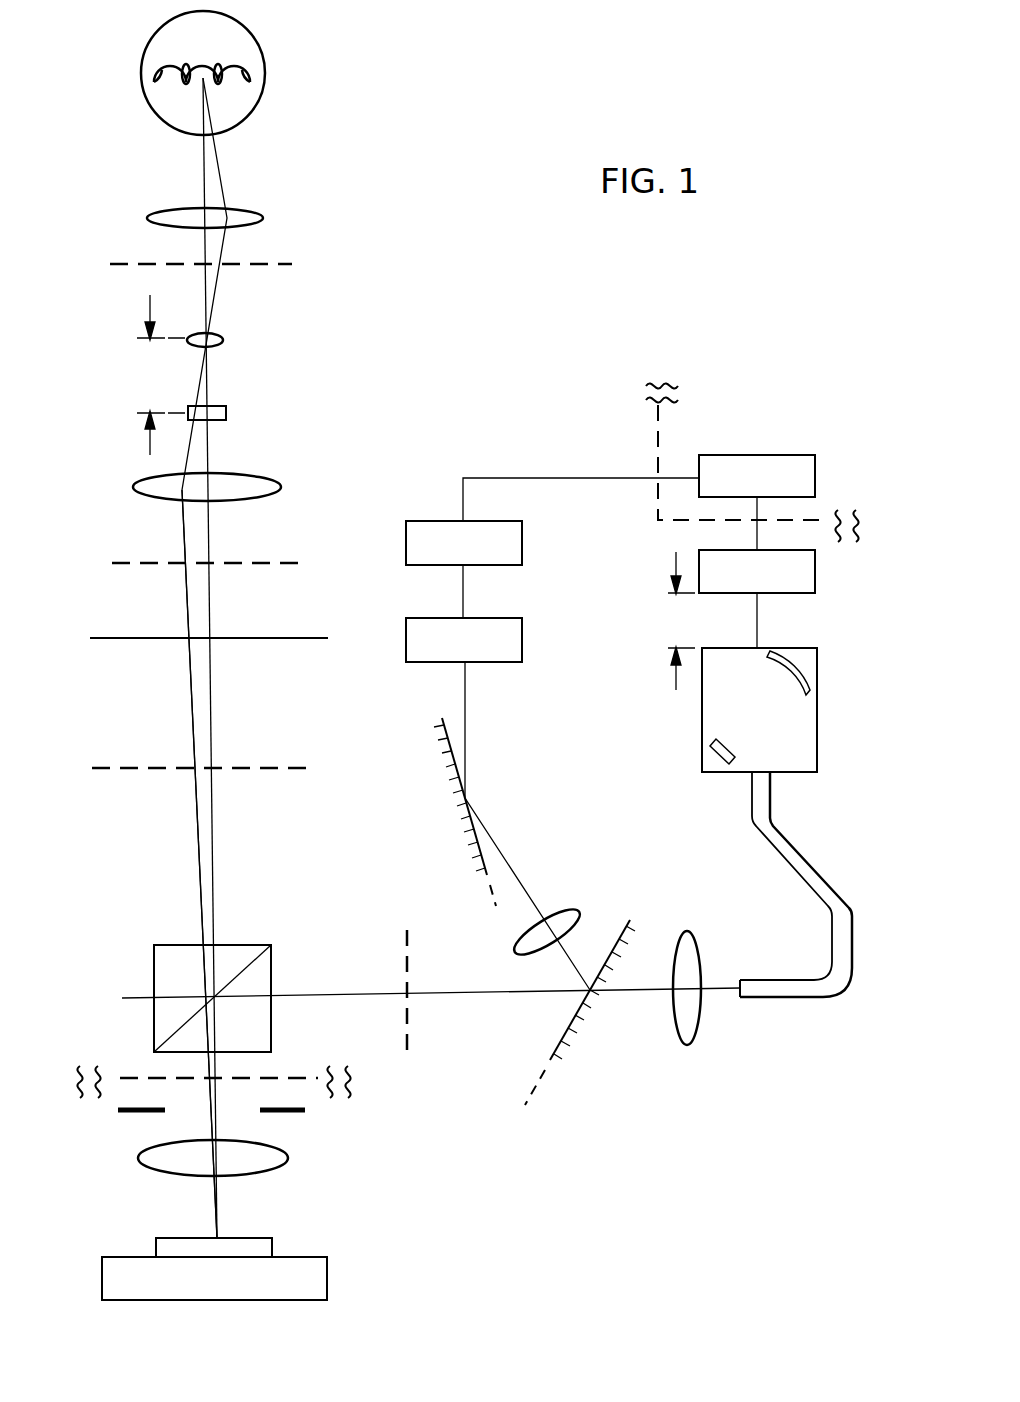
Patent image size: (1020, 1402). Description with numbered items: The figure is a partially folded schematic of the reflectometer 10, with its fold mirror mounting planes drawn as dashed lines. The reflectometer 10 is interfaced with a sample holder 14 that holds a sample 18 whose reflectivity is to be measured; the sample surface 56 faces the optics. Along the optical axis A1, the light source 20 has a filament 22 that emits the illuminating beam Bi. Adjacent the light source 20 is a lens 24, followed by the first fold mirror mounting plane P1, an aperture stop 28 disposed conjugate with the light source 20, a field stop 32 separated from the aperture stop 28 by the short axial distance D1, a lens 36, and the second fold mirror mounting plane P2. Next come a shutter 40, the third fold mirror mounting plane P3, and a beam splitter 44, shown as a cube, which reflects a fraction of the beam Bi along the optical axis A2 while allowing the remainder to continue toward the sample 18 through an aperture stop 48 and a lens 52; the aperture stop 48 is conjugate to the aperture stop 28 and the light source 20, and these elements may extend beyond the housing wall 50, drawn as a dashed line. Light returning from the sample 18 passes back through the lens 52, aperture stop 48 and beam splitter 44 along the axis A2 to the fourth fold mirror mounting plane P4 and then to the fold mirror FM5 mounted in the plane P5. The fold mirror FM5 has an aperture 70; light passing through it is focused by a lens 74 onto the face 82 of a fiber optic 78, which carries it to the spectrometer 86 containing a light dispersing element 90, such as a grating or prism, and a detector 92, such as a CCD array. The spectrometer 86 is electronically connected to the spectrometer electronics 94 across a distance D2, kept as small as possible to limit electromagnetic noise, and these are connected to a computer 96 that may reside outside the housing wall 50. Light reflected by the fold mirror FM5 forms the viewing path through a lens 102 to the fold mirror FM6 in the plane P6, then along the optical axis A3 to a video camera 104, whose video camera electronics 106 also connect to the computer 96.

The reflectometer 10 is at (404, 148).
The sample holder 14 is at (328, 1280).
The sample 18 is at (274, 1242).
The light source 20 is at (252, 46).
The filament 22 is at (232, 82).
The lens 24 is at (256, 214).
The aperture stop 28 is at (222, 336).
The field stop 32 is at (228, 408).
The lens 36 is at (260, 476).
The shutter 40 is at (282, 637).
The beam splitter 44 is at (250, 944).
The aperture stop 48 is at (292, 1112).
The housing wall 50 is at (122, 1076).
The lens 52 is at (272, 1172).
The wafer surface 56 is at (176, 1238).
The aperture 70 is at (598, 1000).
The lens 74 is at (687, 1046).
The fiber optic 78 is at (768, 998).
The face 82 is at (742, 980).
The spectrometer 86 is at (818, 730).
The light dispersing element 90 is at (802, 672).
The detector 92 is at (712, 748).
The spectrometer electronics 94 is at (757, 599).
The computer 96 is at (757, 502).
The lens 102 is at (572, 912).
The video camera 104 is at (464, 613).
The video camera electronics 106 is at (552, 521).
The optical axis A1 is at (205, 152).
The optical axis A2 is at (332, 992).
The optical axis A3 is at (466, 720).
The illuminating beam Bi is at (186, 695).
The axial distance D1 is at (160, 375).
The distance D2 is at (678, 621).
The fold mirror mounting plane P1 is at (288, 266).
The fold mirror mounting plane P2 is at (288, 563).
The fold mirror mounting plane P3 is at (316, 768).
The fold mirror mounting plane P4 is at (408, 1050).
The fold mirror mounting plane P5 is at (531, 1120).
The fold mirror mounting plane P6 is at (499, 918).
The fold mirror FM5 is at (552, 1058).
The fold mirror FM6 is at (445, 752).